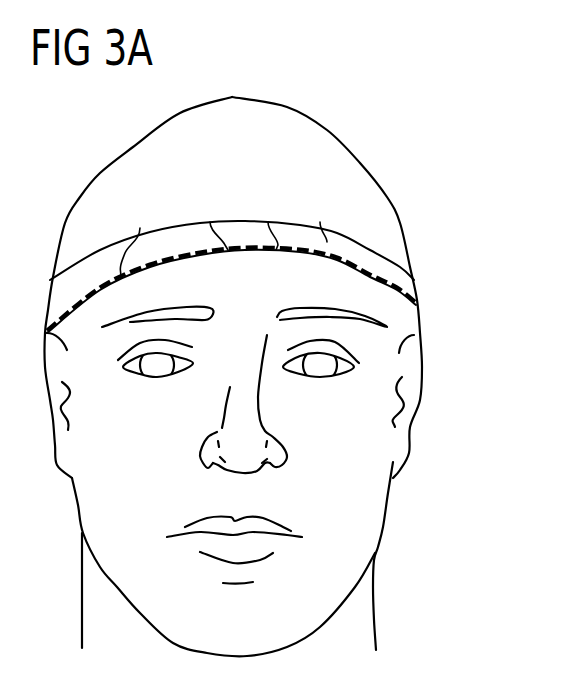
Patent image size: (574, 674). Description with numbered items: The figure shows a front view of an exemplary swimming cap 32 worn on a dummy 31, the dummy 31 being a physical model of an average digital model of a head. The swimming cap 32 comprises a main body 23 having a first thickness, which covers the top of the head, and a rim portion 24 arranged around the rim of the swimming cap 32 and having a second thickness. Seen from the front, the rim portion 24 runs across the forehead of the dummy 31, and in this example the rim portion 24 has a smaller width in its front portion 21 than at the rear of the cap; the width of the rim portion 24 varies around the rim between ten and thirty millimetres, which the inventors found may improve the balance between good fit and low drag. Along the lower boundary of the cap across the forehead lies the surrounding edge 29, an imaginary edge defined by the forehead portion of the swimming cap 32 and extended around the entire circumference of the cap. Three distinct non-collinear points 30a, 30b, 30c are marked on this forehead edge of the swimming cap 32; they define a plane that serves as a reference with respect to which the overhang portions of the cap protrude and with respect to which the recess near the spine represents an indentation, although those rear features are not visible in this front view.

The front portion 21 is at (320, 222).
The main body 23 is at (387, 195).
The rim portion 24 is at (389, 267).
The surrounding edge 29 is at (402, 290).
The first non-collinear point 30a is at (140, 228).
The second non-collinear point 30b is at (210, 222).
The third non-collinear point 30c is at (268, 222).
The dummy 31 is at (140, 546).
The swimming cap 32 is at (89, 214).